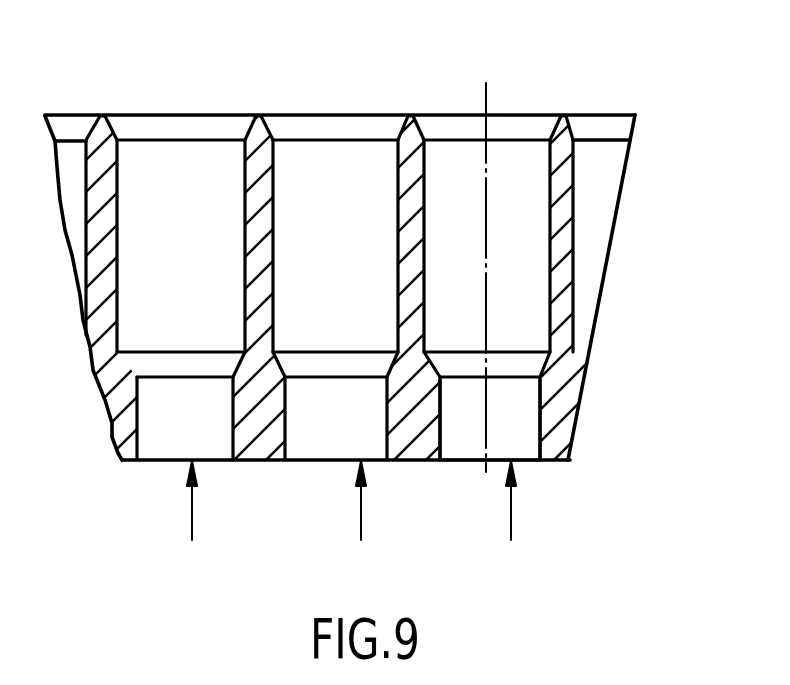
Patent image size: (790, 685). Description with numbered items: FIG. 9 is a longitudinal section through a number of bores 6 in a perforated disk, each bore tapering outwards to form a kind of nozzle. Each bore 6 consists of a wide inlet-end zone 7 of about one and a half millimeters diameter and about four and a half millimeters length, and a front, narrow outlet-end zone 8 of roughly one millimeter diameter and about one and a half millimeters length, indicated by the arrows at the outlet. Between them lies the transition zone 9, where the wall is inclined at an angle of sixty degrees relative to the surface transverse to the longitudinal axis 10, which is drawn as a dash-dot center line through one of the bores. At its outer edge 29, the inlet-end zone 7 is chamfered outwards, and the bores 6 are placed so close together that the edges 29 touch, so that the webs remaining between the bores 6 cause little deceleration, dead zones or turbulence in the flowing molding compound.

The bores 6 is at (353, 521).
The inlet-end zone 7 is at (523, 189).
The outlet-end zone 8 is at (515, 413).
The transition zone 9 is at (522, 362).
The longitudinal axis 10 is at (488, 246).
The outer edge 29 is at (410, 115).